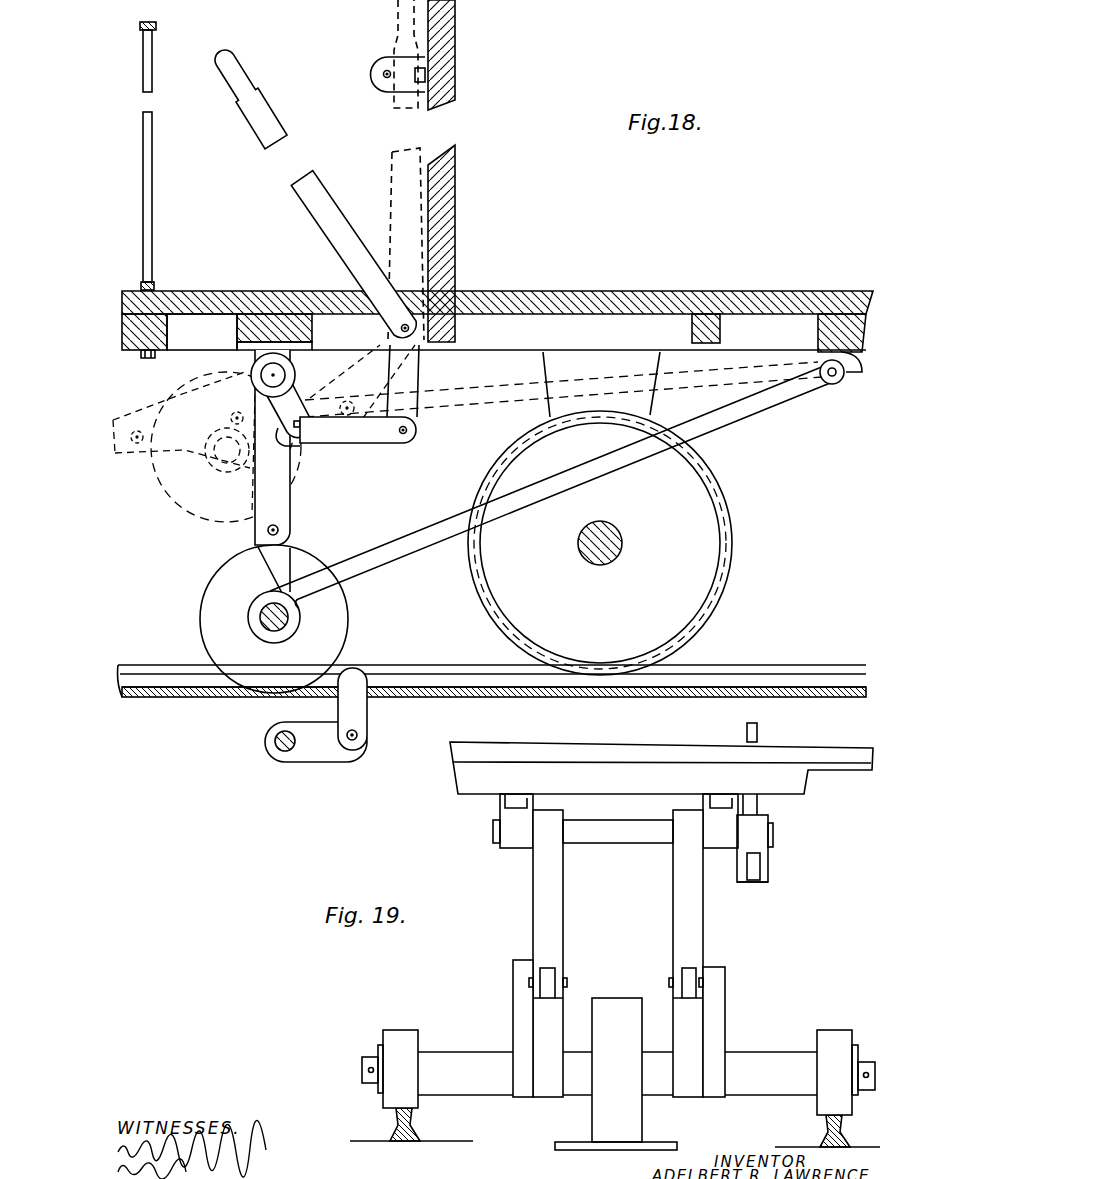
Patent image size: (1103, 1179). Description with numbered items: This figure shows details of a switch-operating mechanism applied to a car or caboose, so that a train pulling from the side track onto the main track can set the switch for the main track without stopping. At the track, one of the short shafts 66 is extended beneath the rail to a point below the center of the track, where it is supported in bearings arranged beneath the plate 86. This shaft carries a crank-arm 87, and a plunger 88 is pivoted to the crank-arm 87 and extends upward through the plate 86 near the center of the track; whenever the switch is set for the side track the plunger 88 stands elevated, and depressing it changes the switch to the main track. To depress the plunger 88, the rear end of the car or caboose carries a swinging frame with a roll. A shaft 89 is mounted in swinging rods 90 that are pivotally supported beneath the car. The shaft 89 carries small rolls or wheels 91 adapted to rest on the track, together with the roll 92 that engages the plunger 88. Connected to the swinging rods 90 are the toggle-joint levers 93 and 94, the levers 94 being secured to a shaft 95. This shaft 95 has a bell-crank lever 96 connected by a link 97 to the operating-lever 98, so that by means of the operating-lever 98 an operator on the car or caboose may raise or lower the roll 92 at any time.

In FIG. 18, the short shaft 66 is at (275, 748).
In FIG. 18, the plate 86 is at (212, 692).
In FIG. 19, the plate 86 is at (578, 1150).
In FIG. 18, the crank-arm 87 is at (306, 760).
In FIG. 18, the plunger 88 is at (365, 712).
In FIG. 18, the shaft 89 is at (260, 630).
In FIG. 19, the shaft 89 is at (364, 1075).
In FIG. 18, the swinging rods 90 is at (394, 560).
In FIG. 19, the swinging rods 90 is at (518, 1000).
In FIG. 19, the small rolls or wheels 91 is at (398, 1045).
In FIG. 18, the roll 92 is at (228, 578).
In FIG. 19, the roll 92 is at (608, 1015).
In FIG. 18, the toggle-joint lever 93 is at (280, 565).
In FIG. 19, the toggle-joint lever 93 is at (552, 1008).
In FIG. 18, the toggle-joint lever 94 is at (262, 475).
In FIG. 19, the toggle-joint lever 94 is at (558, 905).
In FIG. 18, the shaft 95 is at (280, 377).
In FIG. 19, the shaft 95 is at (620, 838).
In FIG. 18, the bell-crank lever 96 is at (295, 448).
In FIG. 19, the bell-crank lever 96 is at (766, 858).
In FIG. 18, the link 97 is at (368, 434).
In FIG. 19, the link 97 is at (752, 884).
In FIG. 18, the operating-lever 98 is at (310, 200).
In FIG. 19, the operating-lever 98 is at (758, 732).